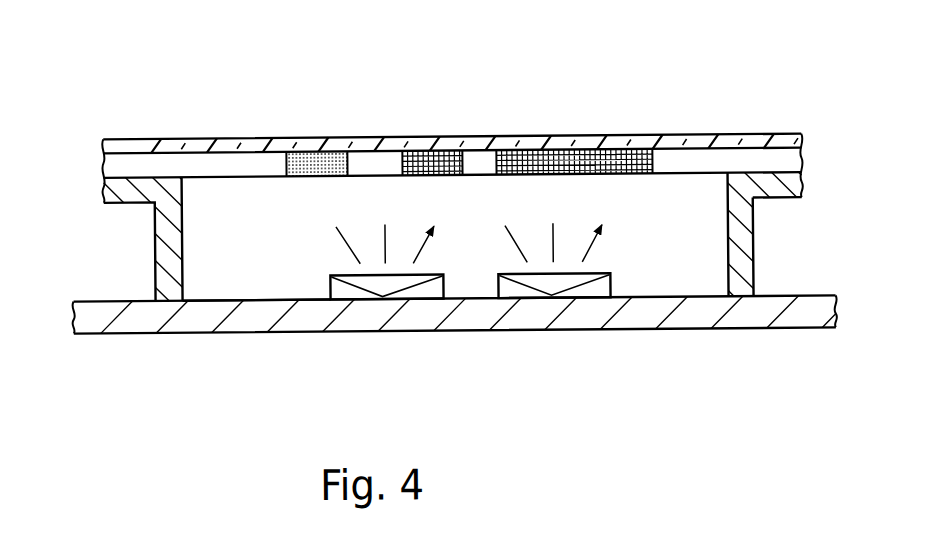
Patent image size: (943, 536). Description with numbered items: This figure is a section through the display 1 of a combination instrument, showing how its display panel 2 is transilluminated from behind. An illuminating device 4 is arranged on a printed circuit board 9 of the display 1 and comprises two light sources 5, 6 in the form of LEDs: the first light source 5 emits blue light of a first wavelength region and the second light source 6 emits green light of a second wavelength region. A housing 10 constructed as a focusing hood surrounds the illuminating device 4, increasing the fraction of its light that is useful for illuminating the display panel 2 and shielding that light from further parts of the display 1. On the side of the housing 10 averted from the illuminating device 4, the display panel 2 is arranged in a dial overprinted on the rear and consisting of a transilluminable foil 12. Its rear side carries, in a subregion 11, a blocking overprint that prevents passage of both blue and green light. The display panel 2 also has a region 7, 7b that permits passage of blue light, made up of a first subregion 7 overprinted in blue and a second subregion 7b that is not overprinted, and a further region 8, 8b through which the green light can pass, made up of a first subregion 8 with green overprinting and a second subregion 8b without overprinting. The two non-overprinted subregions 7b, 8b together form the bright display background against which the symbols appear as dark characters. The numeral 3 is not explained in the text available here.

The display 1 is at (807, 113).
The display panel 2 is at (634, 136).
The display layer 3 is at (637, 178).
The illuminating device 4 is at (305, 282).
The first light source 5 is at (510, 293).
The second light source 6 is at (348, 291).
The first subregion 7 is at (447, 162).
The first subregion 8 is at (307, 161).
The printed circuit board 9 is at (103, 312).
The housing 10 is at (738, 265).
The subregion 11 is at (587, 163).
The transilluminable foil 12 is at (142, 142).
The second subregion 7b is at (193, 160).
The second subregion 8b is at (362, 161).